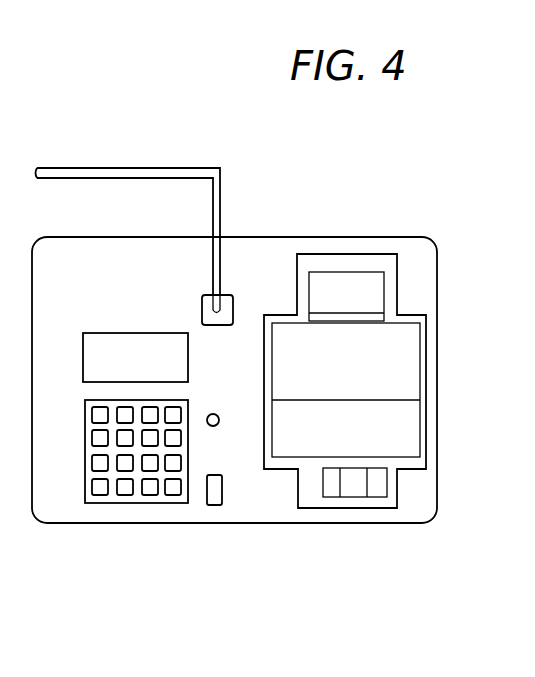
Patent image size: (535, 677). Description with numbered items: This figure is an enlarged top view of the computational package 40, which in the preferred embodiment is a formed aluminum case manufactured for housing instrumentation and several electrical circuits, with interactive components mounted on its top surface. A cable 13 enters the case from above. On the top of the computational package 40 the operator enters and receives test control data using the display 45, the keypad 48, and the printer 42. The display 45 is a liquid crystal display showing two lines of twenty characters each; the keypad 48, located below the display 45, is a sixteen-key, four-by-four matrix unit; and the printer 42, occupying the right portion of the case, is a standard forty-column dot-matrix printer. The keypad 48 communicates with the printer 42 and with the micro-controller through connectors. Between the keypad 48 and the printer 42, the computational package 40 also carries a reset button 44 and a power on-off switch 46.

The cable 13 is at (117, 168).
The computational package 40 is at (349, 216).
The printer 42 is at (403, 440).
The reset button 44 is at (215, 413).
The display 45 is at (107, 348).
The power on-off switch 46 is at (222, 492).
The keypad 48 is at (83, 472).